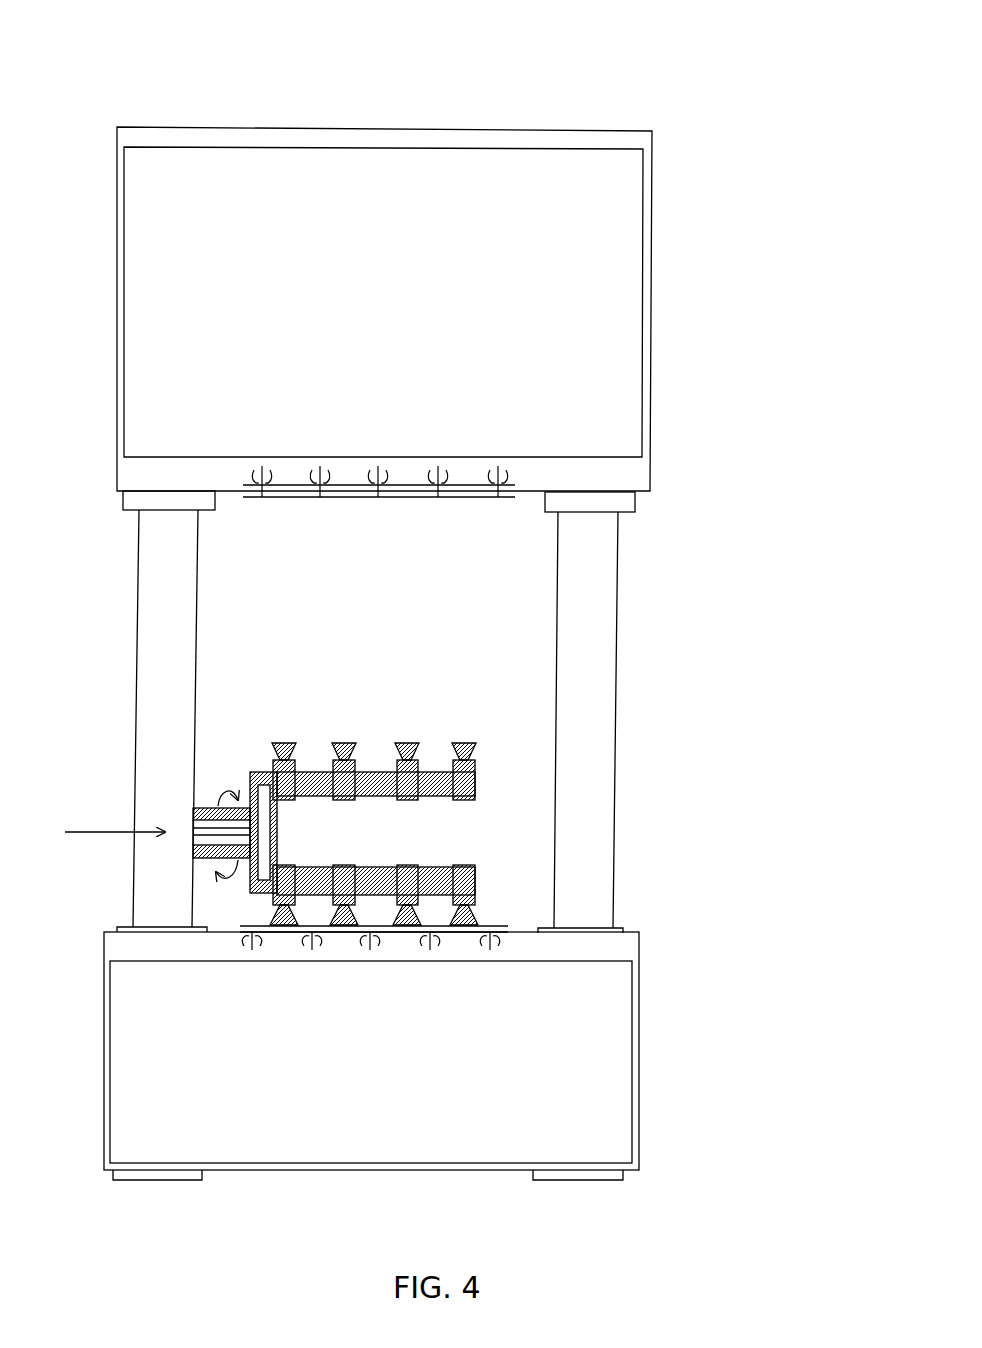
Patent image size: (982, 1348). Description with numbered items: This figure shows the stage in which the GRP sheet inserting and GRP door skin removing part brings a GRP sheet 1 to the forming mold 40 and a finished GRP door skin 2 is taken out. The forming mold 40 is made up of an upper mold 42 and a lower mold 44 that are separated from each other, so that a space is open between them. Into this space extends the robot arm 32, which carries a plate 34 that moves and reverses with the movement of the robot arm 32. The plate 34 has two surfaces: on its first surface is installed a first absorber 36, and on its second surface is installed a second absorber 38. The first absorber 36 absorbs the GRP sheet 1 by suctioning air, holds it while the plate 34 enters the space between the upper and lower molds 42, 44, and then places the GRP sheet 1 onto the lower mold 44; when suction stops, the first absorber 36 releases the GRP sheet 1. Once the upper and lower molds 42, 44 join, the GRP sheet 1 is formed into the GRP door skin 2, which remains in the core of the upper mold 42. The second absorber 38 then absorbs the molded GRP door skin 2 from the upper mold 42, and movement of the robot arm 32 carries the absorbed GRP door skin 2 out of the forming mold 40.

The forming mold 40 is at (686, 118).
The upper mold 42 is at (553, 383).
The lower mold 44 is at (563, 1002).
The GRP door skin 2 is at (470, 498).
The first absorber 36 is at (280, 930).
The plate 34 is at (253, 773).
The robot arm 32 is at (207, 838).
The second absorber 38 is at (287, 743).
The GRP sheet 1 is at (502, 922).